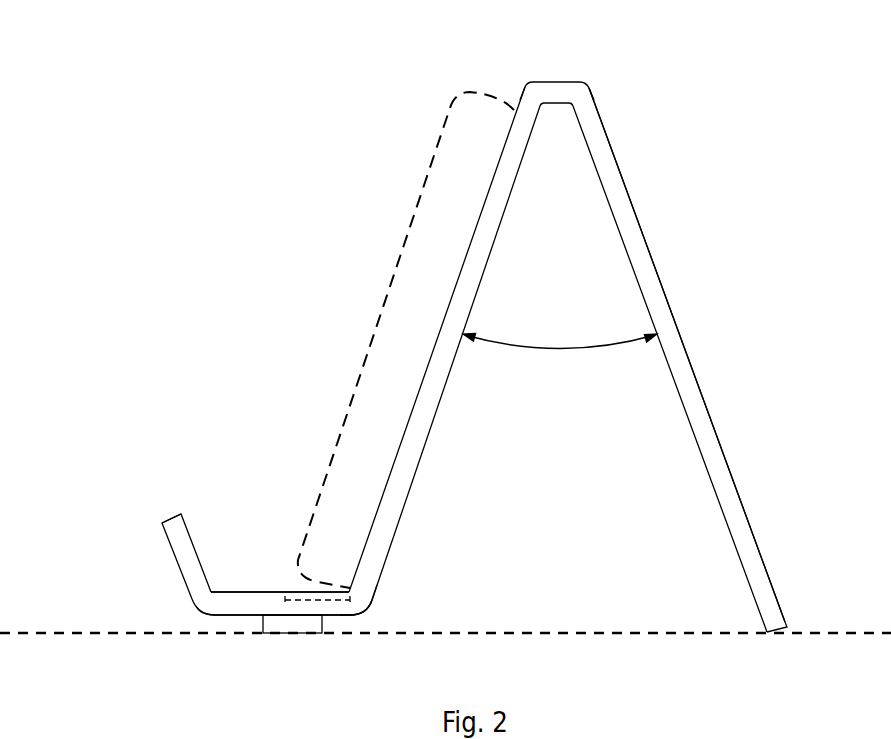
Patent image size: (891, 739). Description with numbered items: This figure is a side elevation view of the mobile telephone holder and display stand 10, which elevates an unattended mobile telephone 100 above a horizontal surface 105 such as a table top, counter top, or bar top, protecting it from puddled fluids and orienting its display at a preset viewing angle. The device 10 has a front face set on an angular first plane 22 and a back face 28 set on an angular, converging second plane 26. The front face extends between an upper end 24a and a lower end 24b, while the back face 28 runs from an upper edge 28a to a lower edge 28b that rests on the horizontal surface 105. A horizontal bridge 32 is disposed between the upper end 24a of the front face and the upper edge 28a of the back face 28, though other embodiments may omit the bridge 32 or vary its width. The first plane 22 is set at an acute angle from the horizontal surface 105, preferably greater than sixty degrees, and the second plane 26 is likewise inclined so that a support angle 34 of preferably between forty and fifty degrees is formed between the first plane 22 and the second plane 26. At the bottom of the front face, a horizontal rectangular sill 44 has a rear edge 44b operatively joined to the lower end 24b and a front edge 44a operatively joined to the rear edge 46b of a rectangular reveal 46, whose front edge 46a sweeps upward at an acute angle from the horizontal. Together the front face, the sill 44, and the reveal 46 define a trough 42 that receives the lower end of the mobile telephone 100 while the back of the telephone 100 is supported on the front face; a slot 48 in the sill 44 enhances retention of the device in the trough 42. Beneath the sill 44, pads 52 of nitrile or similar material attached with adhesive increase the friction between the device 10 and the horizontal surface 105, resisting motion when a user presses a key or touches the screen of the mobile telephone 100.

The mobile telephone holder and display stand 10 is at (96, 171).
The first plane 22 is at (497, 158).
The upper end of front face 24a is at (527, 88).
The lower end of front face 24b is at (375, 602).
The second plane 26 is at (653, 265).
The back face 28 is at (728, 463).
The upper edge of back face 28a is at (590, 93).
The lower edge of back face 28b is at (787, 622).
The horizontal bridge 32 is at (567, 80).
The support angle 34 is at (560, 335).
The trough 42 is at (283, 553).
The horizontal rectangular sill 44 is at (232, 592).
The front edge of sill 44a is at (208, 615).
The rear edge of sill 44b is at (357, 615).
The rectangular reveal 46 is at (177, 562).
The front edge of reveal 46a is at (162, 523).
The rear edge of reveal 46b is at (192, 605).
The slot 48 is at (297, 602).
The pads 52 is at (302, 633).
The mobile telephone 100 is at (425, 182).
The horizontal surface 105 is at (833, 632).